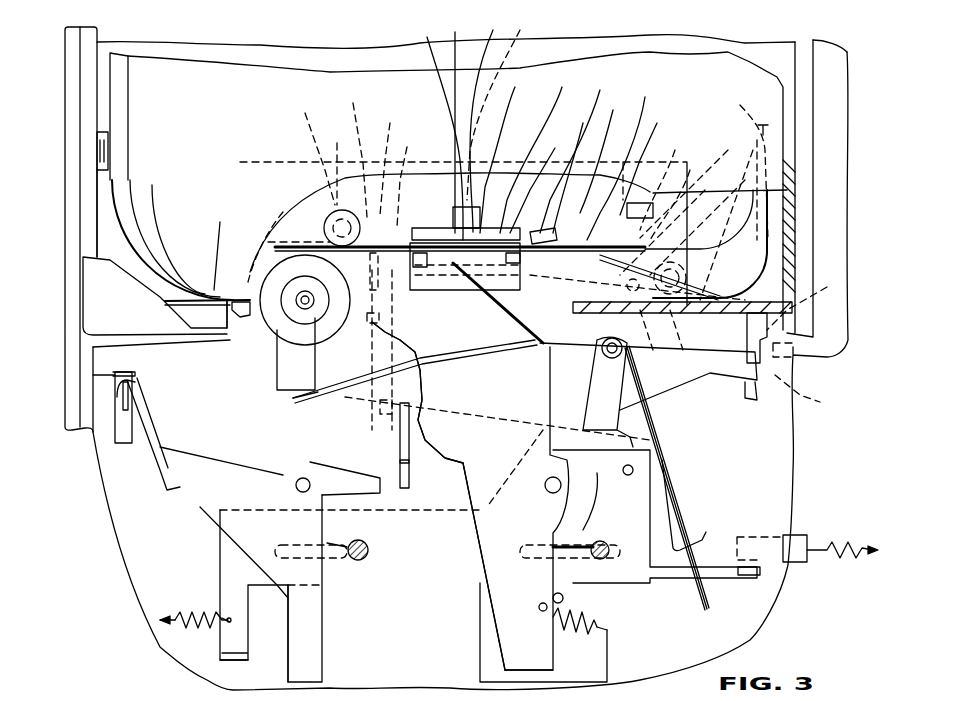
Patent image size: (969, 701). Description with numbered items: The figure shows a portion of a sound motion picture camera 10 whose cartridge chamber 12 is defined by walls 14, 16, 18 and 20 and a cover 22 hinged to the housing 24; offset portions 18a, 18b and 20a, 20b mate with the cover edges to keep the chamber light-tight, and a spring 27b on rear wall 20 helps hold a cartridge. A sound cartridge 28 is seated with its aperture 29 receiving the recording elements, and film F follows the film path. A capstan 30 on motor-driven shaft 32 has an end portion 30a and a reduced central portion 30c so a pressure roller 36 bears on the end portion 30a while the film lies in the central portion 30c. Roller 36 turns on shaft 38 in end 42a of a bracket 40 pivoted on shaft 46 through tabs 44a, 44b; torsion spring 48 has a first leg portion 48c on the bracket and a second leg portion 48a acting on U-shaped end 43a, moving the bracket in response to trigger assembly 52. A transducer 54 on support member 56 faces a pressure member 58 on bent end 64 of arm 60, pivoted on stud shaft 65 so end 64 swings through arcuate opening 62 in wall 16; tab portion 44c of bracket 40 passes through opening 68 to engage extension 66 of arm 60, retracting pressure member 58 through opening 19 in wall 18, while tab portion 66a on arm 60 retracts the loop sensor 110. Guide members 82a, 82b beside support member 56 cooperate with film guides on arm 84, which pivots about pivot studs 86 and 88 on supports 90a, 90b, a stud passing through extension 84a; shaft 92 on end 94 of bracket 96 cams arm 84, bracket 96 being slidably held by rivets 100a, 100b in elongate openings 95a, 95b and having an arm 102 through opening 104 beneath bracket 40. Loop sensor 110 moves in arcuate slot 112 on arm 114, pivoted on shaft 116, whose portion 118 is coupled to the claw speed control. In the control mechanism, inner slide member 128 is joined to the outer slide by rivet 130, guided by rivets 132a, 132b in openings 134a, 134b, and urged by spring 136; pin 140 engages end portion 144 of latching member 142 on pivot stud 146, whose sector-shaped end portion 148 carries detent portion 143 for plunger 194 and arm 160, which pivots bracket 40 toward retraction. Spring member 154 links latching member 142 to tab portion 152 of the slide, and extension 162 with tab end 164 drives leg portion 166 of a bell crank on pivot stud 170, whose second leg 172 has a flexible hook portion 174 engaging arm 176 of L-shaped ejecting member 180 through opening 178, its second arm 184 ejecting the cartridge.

The vehicle body 10 is at (850, 80).
The roof frame 12 is at (262, 55).
The rear post 14 is at (795, 60).
The front post 16 is at (198, 48).
The guide channel 18 is at (167, 297).
The guide plate 18a is at (192, 310).
The guide track 18b is at (228, 244).
The stop 19 is at (240, 298).
The door post 20 is at (97, 30).
The post inner wall 20a is at (88, 103).
The post flange 20b is at (85, 128).
The bracket 22 is at (85, 287).
The door panel 24 is at (70, 57).
The latch keeper 27b is at (105, 142).
The carriage rail 28 is at (535, 124).
The guide 29 is at (412, 174).
The roller 30 is at (297, 188).
The roller axle 30a is at (330, 200).
The roller flange 30c is at (316, 148).
The roller bracket 32 is at (337, 163).
The cam track 36 is at (283, 245).
The pivot hub 38 is at (300, 303).
The actuating lever 40 is at (500, 418).
The hub arm 42a is at (290, 357).
The spring hook 43a is at (702, 535).
The link arm 44a is at (598, 385).
The link arm 44b is at (688, 375).
The link arm 44c is at (812, 404).
The pivot pin 46 is at (606, 338).
The connecting rod 48 is at (675, 460).
The rod end 48a is at (663, 435).
The rod end 48c is at (335, 400).
The return spring 52 is at (800, 570).
The slide block 54 is at (470, 230).
The cable 56 is at (501, 152).
The cable 58 is at (535, 149).
The guide 60 is at (665, 186).
The drive link 62 is at (495, 335).
The cable 64 is at (538, 181).
The guide ramp 65 is at (680, 230).
The latch 66 is at (807, 367).
The latch bolt 66a is at (830, 352).
The striker 68 is at (752, 402).
The cable 82a is at (581, 150).
The cable 82b is at (424, 129).
The housing 84 is at (440, 335).
The housing plate 84a is at (661, 287).
The cable 86 is at (602, 152).
The carriage 88 is at (448, 230).
The cable 90a is at (577, 166).
The cable 90b is at (494, 120).
The cable 92 is at (456, 122).
The guide rail 94 is at (463, 181).
The spring 95a is at (364, 187).
The link bar 95b is at (292, 397).
The guide 96 is at (389, 158).
The stop 100a is at (382, 327).
The stop 100b is at (352, 422).
The pin 102 is at (398, 440).
The pin 104 is at (410, 452).
The cable 110 is at (625, 157).
The cable guide 112 is at (652, 162).
The plate 114 is at (695, 192).
The guide channel 116 is at (712, 248).
The plate 118 is at (835, 285).
The mounting frame 128 is at (445, 583).
The link 130 is at (613, 501).
The pivot pin 132a is at (612, 558).
The pivot pin 132b is at (367, 560).
The hole 134a is at (626, 474).
The slot 134b is at (333, 543).
The spring 136 is at (183, 615).
The spring anchor 140 is at (552, 593).
The lever 142 is at (462, 535).
The cable 143 is at (515, 104).
The lever foot 144 is at (505, 617).
The hole 146 is at (550, 493).
The lever end 148 is at (381, 478).
The frame flange 152 is at (610, 650).
The spring 154 is at (590, 618).
The link 160 is at (420, 377).
The leg 162 is at (230, 630).
The foot 164 is at (237, 660).
The leg 166 is at (325, 655).
The hole 170 is at (300, 478).
The lever 172 is at (205, 465).
The lever arm 174 is at (150, 415).
The pin 176 is at (128, 392).
The bracket 178 is at (115, 440).
The cap 180 is at (135, 372).
The arm 184 is at (93, 375).
The cam 194 is at (393, 392).
The force direction F is at (745, 164).